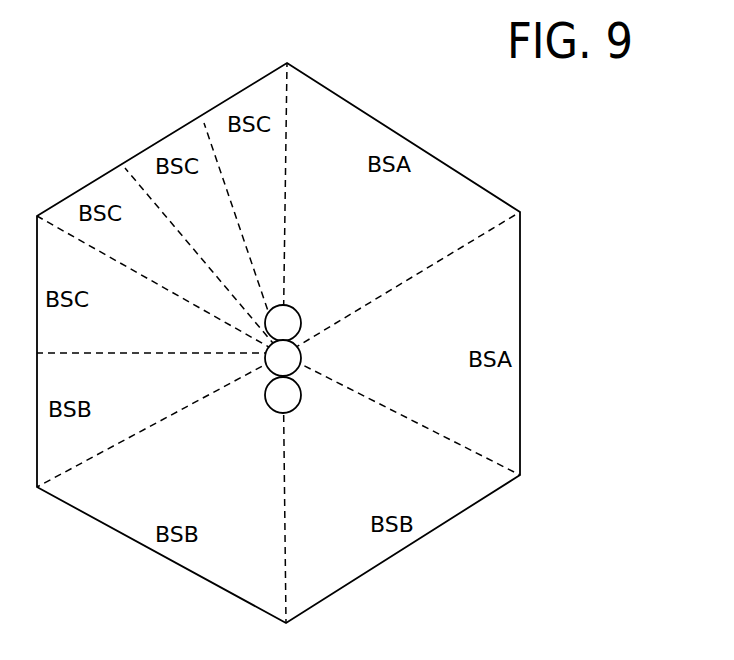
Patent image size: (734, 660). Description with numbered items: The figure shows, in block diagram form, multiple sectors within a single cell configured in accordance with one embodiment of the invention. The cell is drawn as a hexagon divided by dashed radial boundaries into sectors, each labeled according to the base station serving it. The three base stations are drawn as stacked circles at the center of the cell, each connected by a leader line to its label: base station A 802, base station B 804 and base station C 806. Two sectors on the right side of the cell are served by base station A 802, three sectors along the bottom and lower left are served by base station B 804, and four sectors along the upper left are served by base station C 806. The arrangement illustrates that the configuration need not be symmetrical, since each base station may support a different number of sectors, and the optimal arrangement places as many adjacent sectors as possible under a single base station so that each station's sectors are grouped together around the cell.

The base station A 802 is at (298, 314).
The base station B 804 is at (301, 358).
The base station C 806 is at (298, 404).